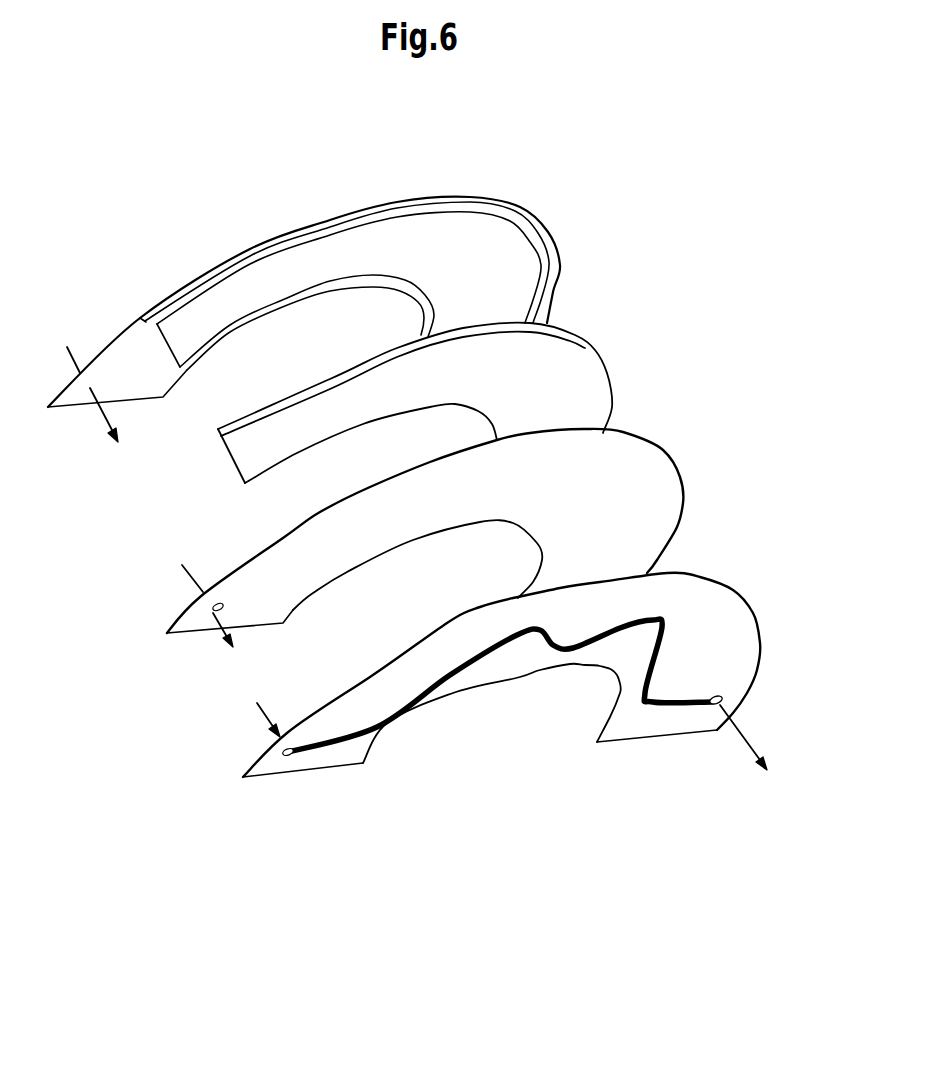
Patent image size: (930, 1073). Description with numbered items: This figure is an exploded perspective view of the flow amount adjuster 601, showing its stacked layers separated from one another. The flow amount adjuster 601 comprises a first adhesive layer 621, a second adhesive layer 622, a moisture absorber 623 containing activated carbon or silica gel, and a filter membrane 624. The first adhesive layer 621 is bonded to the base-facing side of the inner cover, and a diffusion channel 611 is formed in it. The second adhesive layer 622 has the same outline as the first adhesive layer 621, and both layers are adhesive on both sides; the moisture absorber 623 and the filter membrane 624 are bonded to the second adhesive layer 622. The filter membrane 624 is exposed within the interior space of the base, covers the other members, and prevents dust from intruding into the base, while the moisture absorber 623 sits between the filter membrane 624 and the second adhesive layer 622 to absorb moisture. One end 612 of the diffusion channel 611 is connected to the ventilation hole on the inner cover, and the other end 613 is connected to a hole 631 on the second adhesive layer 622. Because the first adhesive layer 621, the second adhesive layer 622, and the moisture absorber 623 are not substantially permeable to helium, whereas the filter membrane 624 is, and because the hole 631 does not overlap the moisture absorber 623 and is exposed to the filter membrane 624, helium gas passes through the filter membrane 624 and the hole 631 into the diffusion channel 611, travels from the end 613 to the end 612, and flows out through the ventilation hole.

The flow amount adjuster 601 is at (244, 186).
The diffusion channel 611 is at (553, 650).
The one end of the diffusion channel 612 is at (715, 704).
The other end of the diffusion channel 613 is at (287, 755).
The first adhesive layer 621 is at (703, 573).
The second adhesive layer 622 is at (635, 433).
The moisture absorber 623 is at (585, 340).
The filter membrane 624 is at (512, 208).
The hole 631 is at (212, 610).